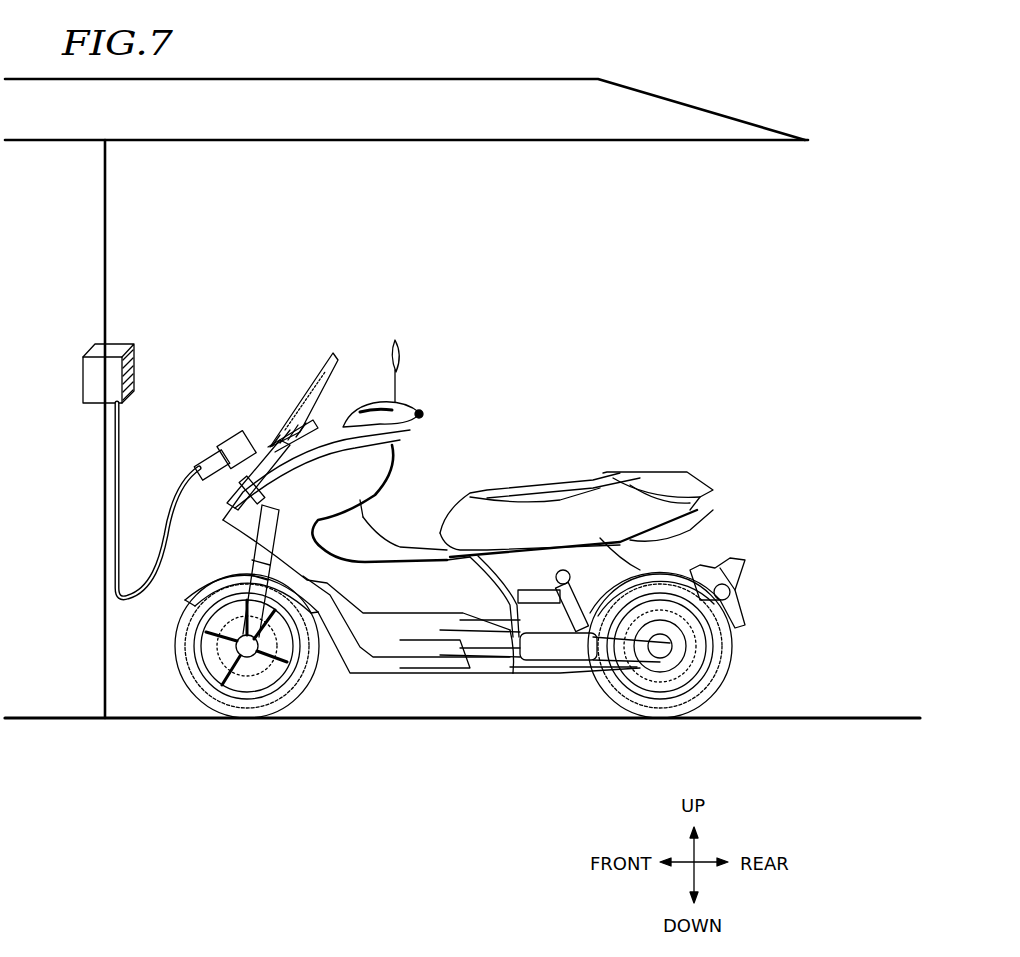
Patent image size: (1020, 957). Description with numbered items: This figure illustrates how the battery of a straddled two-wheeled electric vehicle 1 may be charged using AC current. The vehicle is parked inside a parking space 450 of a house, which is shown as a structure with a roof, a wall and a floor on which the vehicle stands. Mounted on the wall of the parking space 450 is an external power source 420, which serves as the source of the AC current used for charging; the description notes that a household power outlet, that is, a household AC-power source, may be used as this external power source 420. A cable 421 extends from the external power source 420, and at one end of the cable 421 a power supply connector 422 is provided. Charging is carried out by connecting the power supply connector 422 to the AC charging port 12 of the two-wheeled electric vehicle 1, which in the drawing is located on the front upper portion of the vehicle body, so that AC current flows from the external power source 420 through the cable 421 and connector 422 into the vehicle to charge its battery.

The two-wheeled electric vehicle 1 is at (460, 528).
The AC charging port 12 is at (254, 487).
The external power source 420 is at (113, 346).
The cable 421 is at (120, 492).
The power supply connector 422 is at (226, 455).
The parking space 450 is at (800, 258).